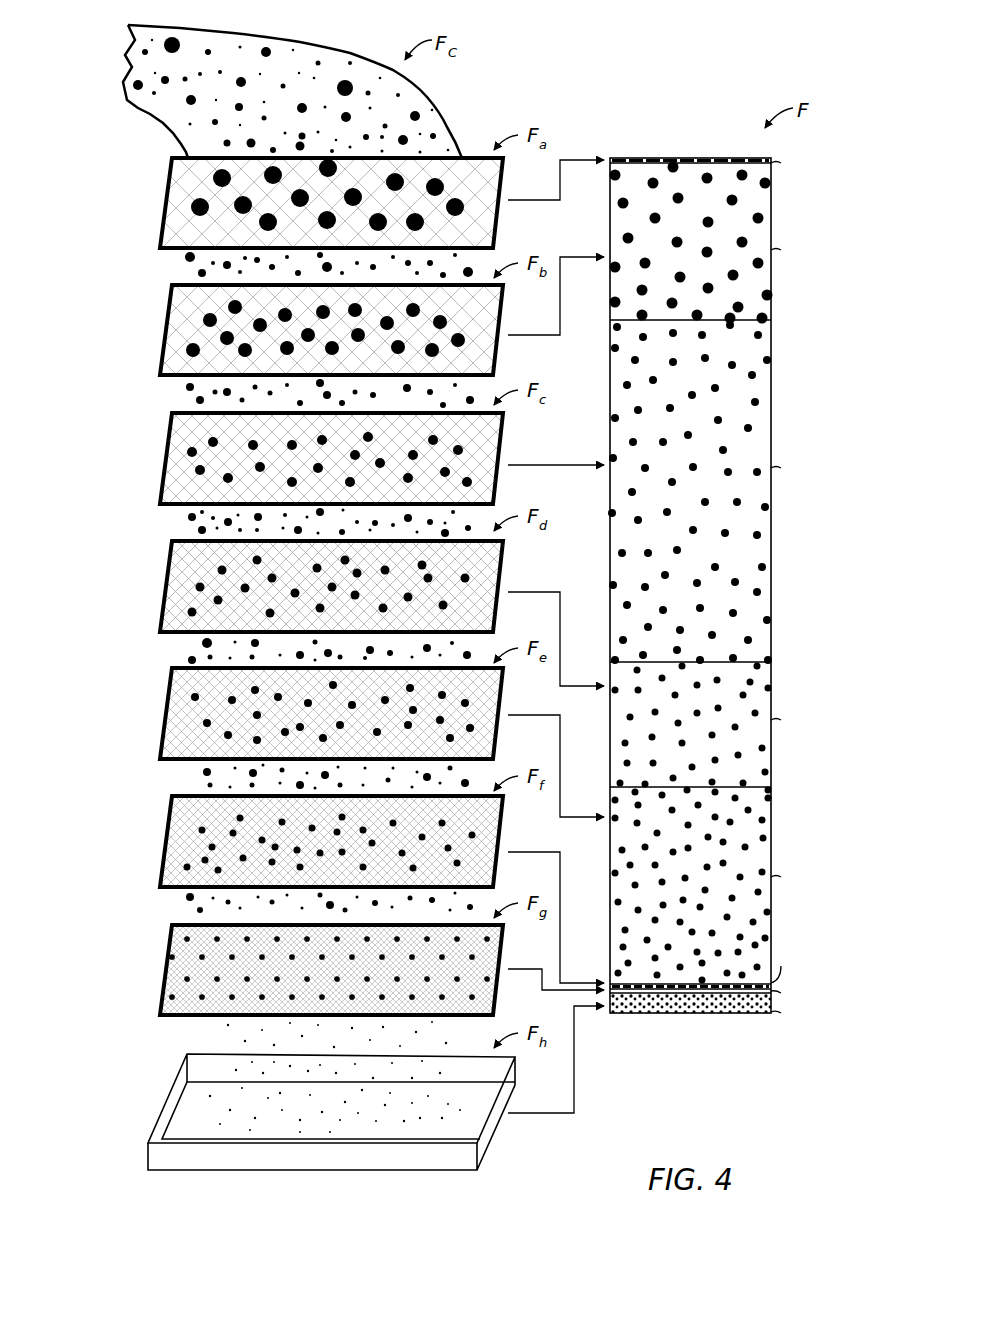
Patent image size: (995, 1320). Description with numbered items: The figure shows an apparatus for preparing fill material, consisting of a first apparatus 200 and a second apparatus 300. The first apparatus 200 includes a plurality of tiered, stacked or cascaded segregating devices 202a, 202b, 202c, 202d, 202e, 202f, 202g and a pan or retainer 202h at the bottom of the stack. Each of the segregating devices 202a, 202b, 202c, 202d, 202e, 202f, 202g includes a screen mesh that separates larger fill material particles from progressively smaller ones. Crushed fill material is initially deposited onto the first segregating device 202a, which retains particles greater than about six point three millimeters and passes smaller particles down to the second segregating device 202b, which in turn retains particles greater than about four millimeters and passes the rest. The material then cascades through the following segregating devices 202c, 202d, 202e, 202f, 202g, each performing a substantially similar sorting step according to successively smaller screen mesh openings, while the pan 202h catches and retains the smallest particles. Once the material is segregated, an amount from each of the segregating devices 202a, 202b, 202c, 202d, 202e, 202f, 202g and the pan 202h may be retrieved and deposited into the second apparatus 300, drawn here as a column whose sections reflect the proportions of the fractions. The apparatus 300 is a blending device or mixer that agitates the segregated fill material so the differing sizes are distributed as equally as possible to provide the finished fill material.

The first apparatus 200 is at (92, 1170).
The first segregating device 202a is at (170, 175).
The second segregating device 202b is at (170, 302).
The third segregating device 202c is at (170, 430).
The fourth segregating device 202d is at (170, 555).
The fifth segregating device 202e is at (170, 682).
The sixth segregating device 202f is at (170, 809).
The seventh segregating device 202g is at (170, 934).
The pan 202h is at (166, 1092).
The second apparatus 300 is at (797, 597).